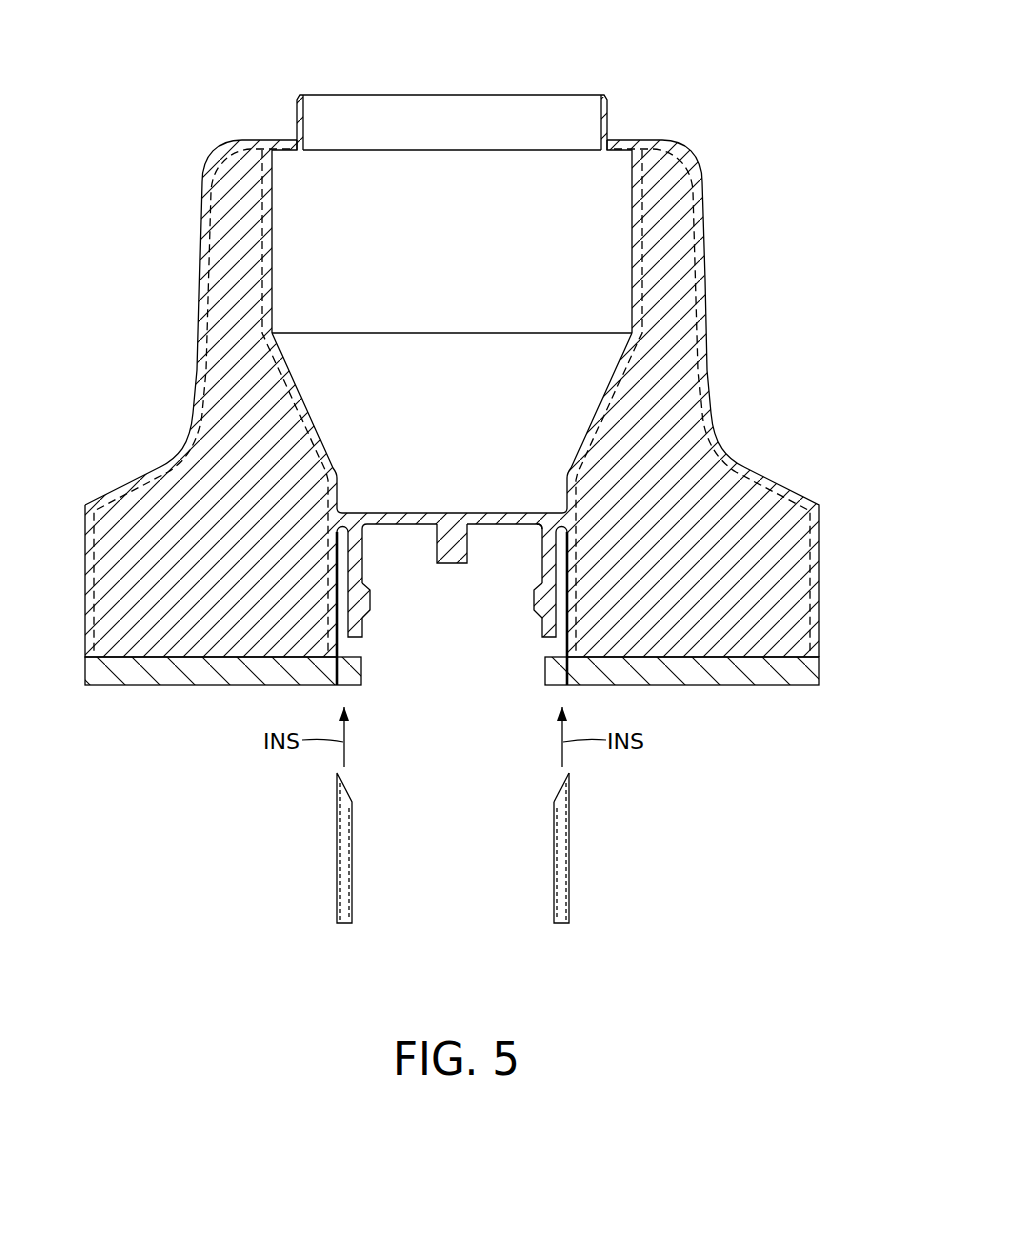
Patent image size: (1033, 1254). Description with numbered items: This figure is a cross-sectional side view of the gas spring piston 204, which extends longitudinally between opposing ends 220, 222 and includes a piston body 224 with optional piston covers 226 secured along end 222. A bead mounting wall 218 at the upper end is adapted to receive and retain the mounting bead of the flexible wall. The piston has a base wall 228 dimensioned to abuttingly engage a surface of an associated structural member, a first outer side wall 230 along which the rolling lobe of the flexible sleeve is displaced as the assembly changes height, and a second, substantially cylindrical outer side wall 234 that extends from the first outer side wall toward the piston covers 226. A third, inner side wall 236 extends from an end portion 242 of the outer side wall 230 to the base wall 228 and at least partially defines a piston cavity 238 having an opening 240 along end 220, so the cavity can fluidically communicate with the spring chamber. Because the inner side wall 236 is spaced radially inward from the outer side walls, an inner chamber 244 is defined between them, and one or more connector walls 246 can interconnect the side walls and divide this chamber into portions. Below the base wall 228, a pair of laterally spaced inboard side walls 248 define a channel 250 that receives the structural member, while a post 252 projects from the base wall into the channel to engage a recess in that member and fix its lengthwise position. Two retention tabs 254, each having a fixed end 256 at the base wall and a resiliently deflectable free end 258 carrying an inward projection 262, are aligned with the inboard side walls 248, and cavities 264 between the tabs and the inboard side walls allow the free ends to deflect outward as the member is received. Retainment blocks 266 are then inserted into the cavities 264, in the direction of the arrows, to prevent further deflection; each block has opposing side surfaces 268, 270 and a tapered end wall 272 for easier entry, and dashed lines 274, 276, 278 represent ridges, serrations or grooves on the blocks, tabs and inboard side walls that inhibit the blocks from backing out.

The gas spring piston 204 is at (722, 108).
The bead mounting wall 218 is at (605, 123).
The end 220 is at (713, 163).
The end 222 is at (826, 700).
The piston body 224 is at (232, 423).
The piston covers 226 is at (143, 670).
The base wall 228 is at (500, 520).
The outer side wall 230 is at (705, 312).
The outer side wall 234 is at (820, 540).
The inner side wall 236 is at (628, 260).
The piston cavity 238 is at (322, 237).
The opening 240 is at (370, 128).
The end portion 242 is at (290, 142).
The inner chamber 244 is at (685, 480).
The connector walls 246 is at (160, 492).
The inboard side walls 248 is at (363, 655).
The channel 250 is at (445, 685).
The post 252 is at (452, 545).
The retention tabs 254 is at (375, 613).
The fixed end 256 is at (358, 563).
The free end 258 is at (557, 630).
The projections 262 is at (366, 605).
The cavities 264 is at (336, 577).
The retainment blocks 266 is at (333, 933).
The side surface 268 is at (554, 860).
The side surface 270 is at (570, 848).
The tapered end wall 272 is at (557, 785).
The dashed lines 274 is at (337, 860).
The dashed lines 276 is at (557, 528).
The dashed lines 278 is at (347, 528).